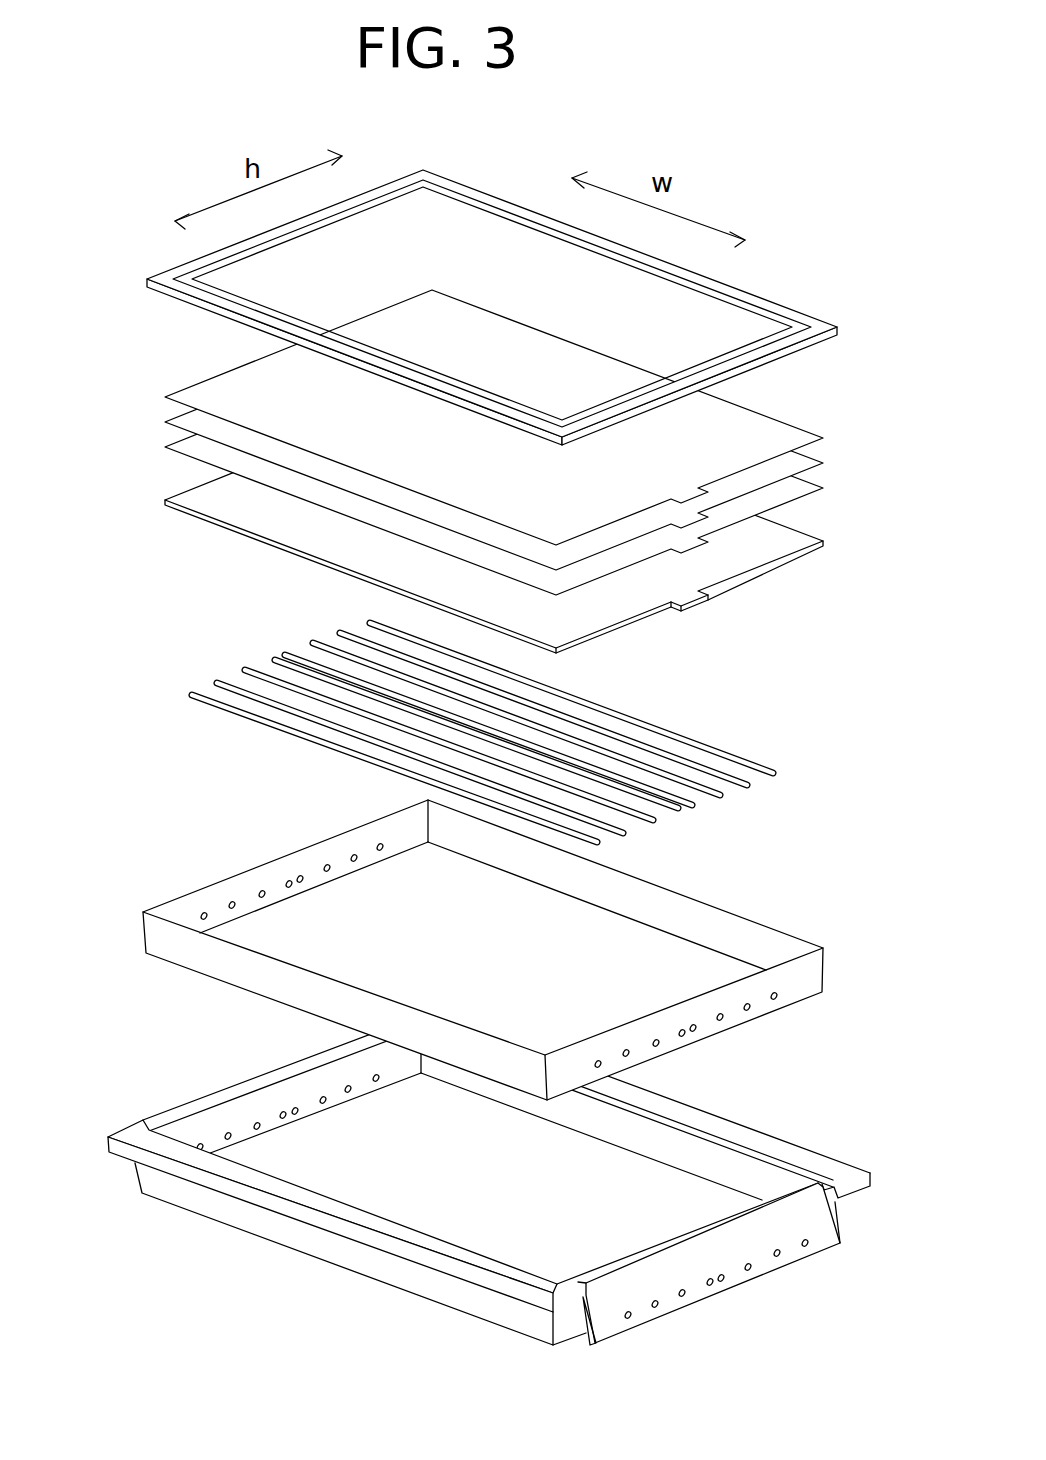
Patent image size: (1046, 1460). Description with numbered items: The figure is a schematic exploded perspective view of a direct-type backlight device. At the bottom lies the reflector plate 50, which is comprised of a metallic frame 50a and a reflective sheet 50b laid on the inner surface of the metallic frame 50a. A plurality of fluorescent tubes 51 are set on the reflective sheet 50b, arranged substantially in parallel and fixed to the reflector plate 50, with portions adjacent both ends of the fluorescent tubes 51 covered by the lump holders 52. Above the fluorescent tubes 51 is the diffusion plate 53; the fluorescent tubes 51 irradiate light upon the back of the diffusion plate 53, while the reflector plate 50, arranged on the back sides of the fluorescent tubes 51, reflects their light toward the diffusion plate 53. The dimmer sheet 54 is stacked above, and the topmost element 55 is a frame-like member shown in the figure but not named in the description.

The reflector plate 50 is at (114, 968).
The metallic frame 50a is at (135, 1133).
The reflective sheet 50b is at (150, 937).
The fluorescent tubes 51 is at (200, 698).
The lump holders 52 is at (705, 1297).
The diffusion plate 53 is at (177, 508).
The dimmer sheet 54 is at (159, 374).
The frame 55 is at (150, 275).